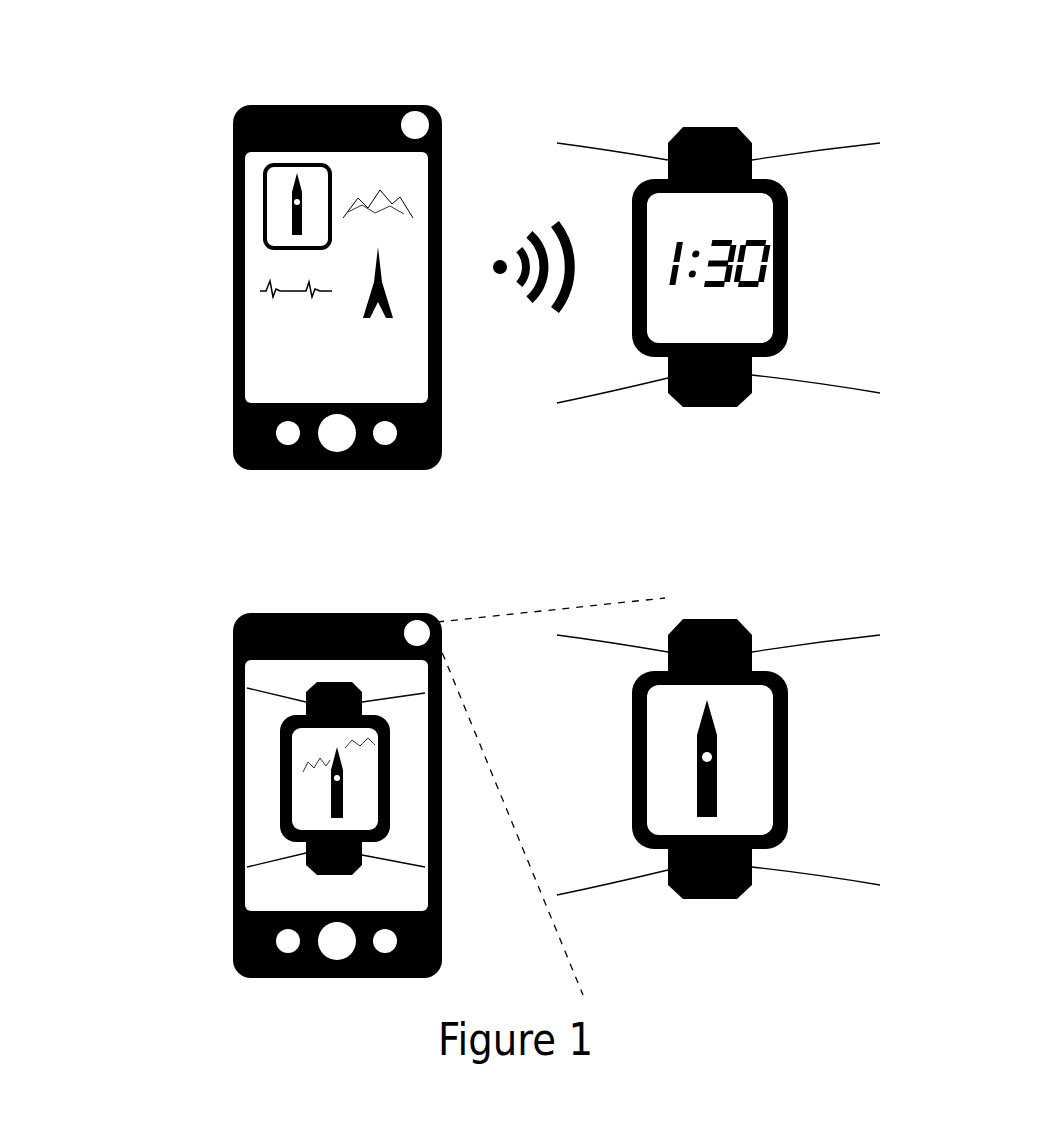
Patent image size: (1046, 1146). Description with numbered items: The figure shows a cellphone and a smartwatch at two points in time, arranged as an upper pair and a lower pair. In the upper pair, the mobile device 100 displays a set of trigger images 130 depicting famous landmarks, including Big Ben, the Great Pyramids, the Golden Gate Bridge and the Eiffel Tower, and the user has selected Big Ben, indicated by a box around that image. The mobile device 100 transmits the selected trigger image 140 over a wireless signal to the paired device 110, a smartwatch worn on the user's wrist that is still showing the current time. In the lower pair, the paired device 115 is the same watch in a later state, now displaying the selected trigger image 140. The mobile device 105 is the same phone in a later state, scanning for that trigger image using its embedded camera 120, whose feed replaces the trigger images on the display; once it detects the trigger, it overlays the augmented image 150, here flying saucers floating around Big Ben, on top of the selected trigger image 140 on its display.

The mobile device 100 is at (337, 107).
The mobile device 105 is at (337, 613).
The paired device 110 is at (782, 62).
The paired device 115 is at (778, 548).
The camera 120 is at (490, 560).
The set of trigger images 130 is at (283, 204).
The selected trigger image 140 is at (720, 783).
The augmented image 150 is at (307, 785).